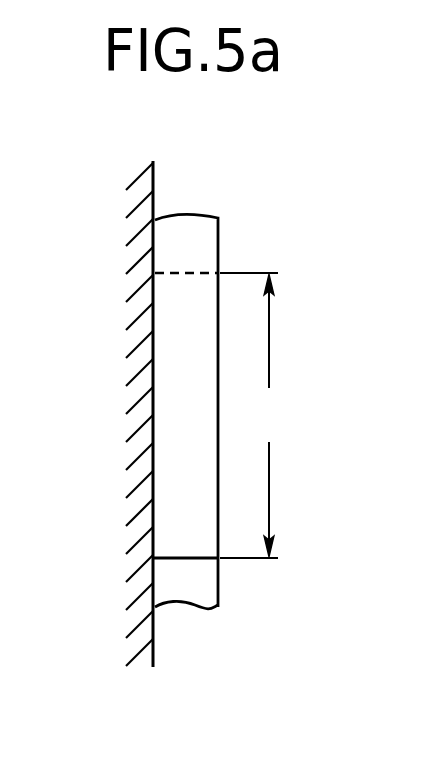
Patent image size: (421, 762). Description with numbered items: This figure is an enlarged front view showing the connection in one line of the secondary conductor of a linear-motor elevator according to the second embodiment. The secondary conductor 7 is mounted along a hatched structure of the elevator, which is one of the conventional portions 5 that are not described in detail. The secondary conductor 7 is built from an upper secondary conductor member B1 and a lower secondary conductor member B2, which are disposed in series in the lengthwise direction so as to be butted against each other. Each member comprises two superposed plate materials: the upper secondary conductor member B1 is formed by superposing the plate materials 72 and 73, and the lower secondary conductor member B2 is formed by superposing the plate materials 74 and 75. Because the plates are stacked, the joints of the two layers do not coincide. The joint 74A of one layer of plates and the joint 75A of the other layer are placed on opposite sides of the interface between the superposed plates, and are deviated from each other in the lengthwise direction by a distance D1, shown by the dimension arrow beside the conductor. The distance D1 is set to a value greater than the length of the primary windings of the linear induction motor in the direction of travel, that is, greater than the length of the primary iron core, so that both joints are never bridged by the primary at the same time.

The conventional elevator portion 5 is at (142, 229).
The secondary conductor 7 is at (193, 215).
The plate material 72 is at (213, 251).
The plate material 73 is at (163, 398).
The plate material 74 is at (162, 495).
The joint 74A is at (190, 273).
The plate material 75 is at (212, 592).
The joint 75A is at (176, 557).
The upper secondary conductor member B1 is at (218, 384).
The lower secondary conductor member B2 is at (180, 603).
The distance D1 is at (257, 415).